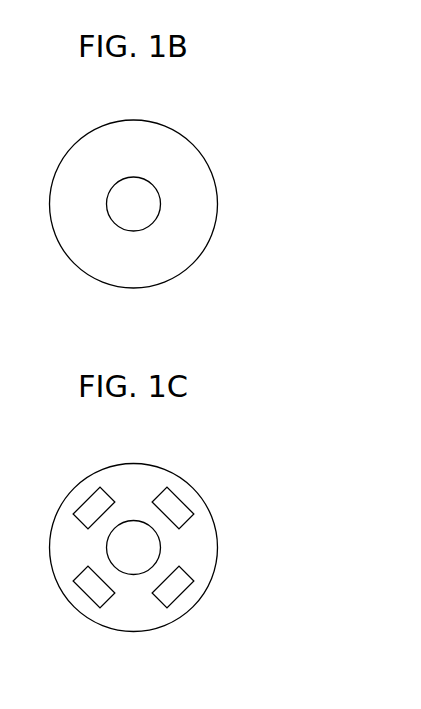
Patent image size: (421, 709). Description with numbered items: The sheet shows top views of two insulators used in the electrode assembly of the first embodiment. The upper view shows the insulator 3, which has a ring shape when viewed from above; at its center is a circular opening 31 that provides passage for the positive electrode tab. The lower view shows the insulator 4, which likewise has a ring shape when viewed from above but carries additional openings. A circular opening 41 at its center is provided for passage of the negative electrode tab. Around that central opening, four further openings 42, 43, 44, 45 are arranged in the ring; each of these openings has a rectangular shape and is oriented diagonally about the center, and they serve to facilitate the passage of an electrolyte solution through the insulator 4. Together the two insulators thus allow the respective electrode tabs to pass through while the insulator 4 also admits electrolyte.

In FIG. 1B, the insulator 3 is at (215, 115).
In FIG. 1B, the circular opening 31 is at (157, 198).
In FIG. 1C, the insulator 4 is at (213, 457).
In FIG. 1C, the circular opening 41 is at (155, 541).
In FIG. 1C, the opening 42 is at (178, 496).
In FIG. 1C, the opening 43 is at (176, 600).
In FIG. 1C, the opening 44 is at (90, 600).
In FIG. 1C, the opening 45 is at (90, 496).